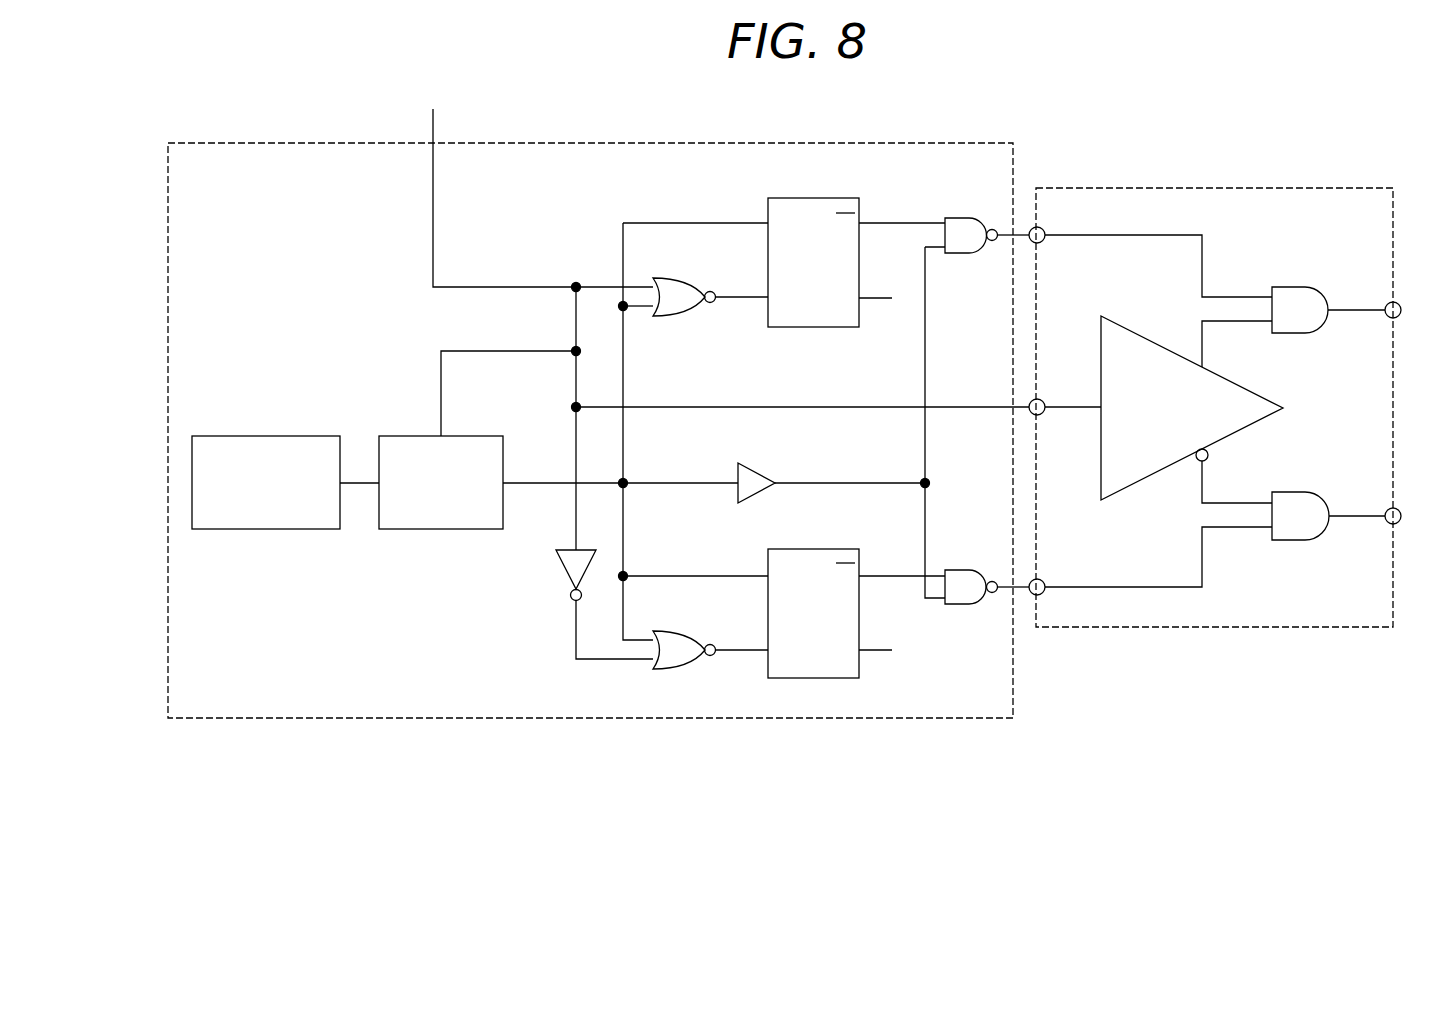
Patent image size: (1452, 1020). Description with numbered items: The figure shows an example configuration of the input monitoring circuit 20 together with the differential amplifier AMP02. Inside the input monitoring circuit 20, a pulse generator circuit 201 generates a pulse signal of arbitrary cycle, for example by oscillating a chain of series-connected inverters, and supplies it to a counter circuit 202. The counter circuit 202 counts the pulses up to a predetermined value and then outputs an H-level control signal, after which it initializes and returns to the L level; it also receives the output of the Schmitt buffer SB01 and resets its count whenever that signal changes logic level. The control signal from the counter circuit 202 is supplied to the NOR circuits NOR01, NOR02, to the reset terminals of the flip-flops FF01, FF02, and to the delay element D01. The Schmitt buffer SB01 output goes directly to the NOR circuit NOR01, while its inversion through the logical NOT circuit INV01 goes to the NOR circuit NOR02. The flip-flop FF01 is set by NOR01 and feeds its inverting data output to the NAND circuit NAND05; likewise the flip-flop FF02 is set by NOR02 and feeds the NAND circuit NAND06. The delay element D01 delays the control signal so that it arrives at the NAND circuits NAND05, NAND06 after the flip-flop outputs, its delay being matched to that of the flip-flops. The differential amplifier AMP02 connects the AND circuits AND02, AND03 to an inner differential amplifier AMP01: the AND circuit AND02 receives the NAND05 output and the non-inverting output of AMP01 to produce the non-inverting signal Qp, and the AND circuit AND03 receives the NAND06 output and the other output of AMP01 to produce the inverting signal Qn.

The input monitoring circuit 20 is at (965, 143).
The pulse generator circuit 201 is at (274, 436).
The counter circuit 202 is at (486, 436).
The Schmitt buffer SB01 is at (445, 183).
The logical NOT circuit INV01 is at (573, 604).
The NOR circuit NOR01 is at (672, 282).
The NOR circuit NOR02 is at (710, 635).
The flip-flop FF01 is at (784, 247).
The flip-flop FF02 is at (784, 598).
The delay element D01 is at (763, 473).
The NAND circuit NAND05 is at (972, 221).
The NAND circuit NAND06 is at (972, 604).
The differential amplifier AMP01 is at (1139, 334).
The differential amplifier AMP02 is at (1345, 188).
The AND circuit AND02 is at (1327, 295).
The AND circuit AND03 is at (1326, 501).
The non-inverting signal Qp is at (1412, 309).
The inverting signal Qn is at (1412, 515).